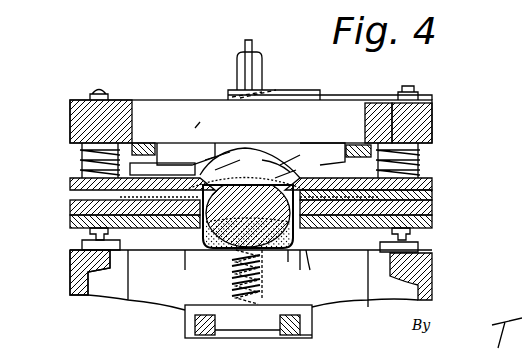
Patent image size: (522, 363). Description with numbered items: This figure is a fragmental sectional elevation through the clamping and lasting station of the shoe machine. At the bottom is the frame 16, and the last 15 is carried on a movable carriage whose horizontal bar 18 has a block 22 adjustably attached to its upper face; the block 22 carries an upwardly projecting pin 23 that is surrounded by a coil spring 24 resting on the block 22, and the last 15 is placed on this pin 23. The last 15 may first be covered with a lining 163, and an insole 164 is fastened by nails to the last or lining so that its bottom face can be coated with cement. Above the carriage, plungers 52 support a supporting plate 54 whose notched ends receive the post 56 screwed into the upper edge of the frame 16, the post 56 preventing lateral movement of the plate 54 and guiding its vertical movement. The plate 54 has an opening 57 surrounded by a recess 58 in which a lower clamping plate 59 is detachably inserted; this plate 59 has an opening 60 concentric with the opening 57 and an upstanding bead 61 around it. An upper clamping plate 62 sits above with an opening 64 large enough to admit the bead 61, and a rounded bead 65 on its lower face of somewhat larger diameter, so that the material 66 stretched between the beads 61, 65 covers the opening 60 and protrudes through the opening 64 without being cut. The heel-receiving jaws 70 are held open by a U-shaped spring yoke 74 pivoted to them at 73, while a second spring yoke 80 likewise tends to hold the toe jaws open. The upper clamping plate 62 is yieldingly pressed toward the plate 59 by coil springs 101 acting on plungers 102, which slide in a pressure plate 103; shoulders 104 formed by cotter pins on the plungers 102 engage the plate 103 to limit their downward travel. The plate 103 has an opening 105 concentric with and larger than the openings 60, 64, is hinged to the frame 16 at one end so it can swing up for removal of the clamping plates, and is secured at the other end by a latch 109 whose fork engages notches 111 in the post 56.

The last 15 is at (215, 250).
The frame 16 is at (75, 285).
The horizontal bar 18 is at (312, 334).
The block 22 is at (248, 321).
The pin 23 is at (236, 296).
The coil spring 24 is at (262, 285).
The plungers 52 is at (90, 236).
The supporting plate 54 is at (432, 226).
The post 56 is at (262, 62).
The opening 57 is at (190, 250).
The recess 58 is at (432, 210).
The lower clamping plate 59 is at (378, 253).
The opening 60 is at (203, 205).
The bead 61 is at (305, 205).
The upper clamping plate 62 is at (432, 194).
The opening 64 is at (278, 162).
The bead 65 is at (70, 200).
The material 66 is at (270, 160).
The complementary jaws 70 is at (162, 169).
The pivot 73 is at (356, 145).
The U-shaped yoke 74 is at (200, 137).
The U-shaped yoke 80 is at (378, 115).
The coil springs 101 is at (80, 152).
The plungers 102 is at (72, 180).
The pressure plate 103 is at (432, 118).
The shoulders 104 is at (92, 96).
The opening 105 is at (200, 122).
The latch 109 is at (338, 95).
The notches 111 is at (270, 90).
The lining 163 is at (308, 250).
The insole 164 is at (250, 250).